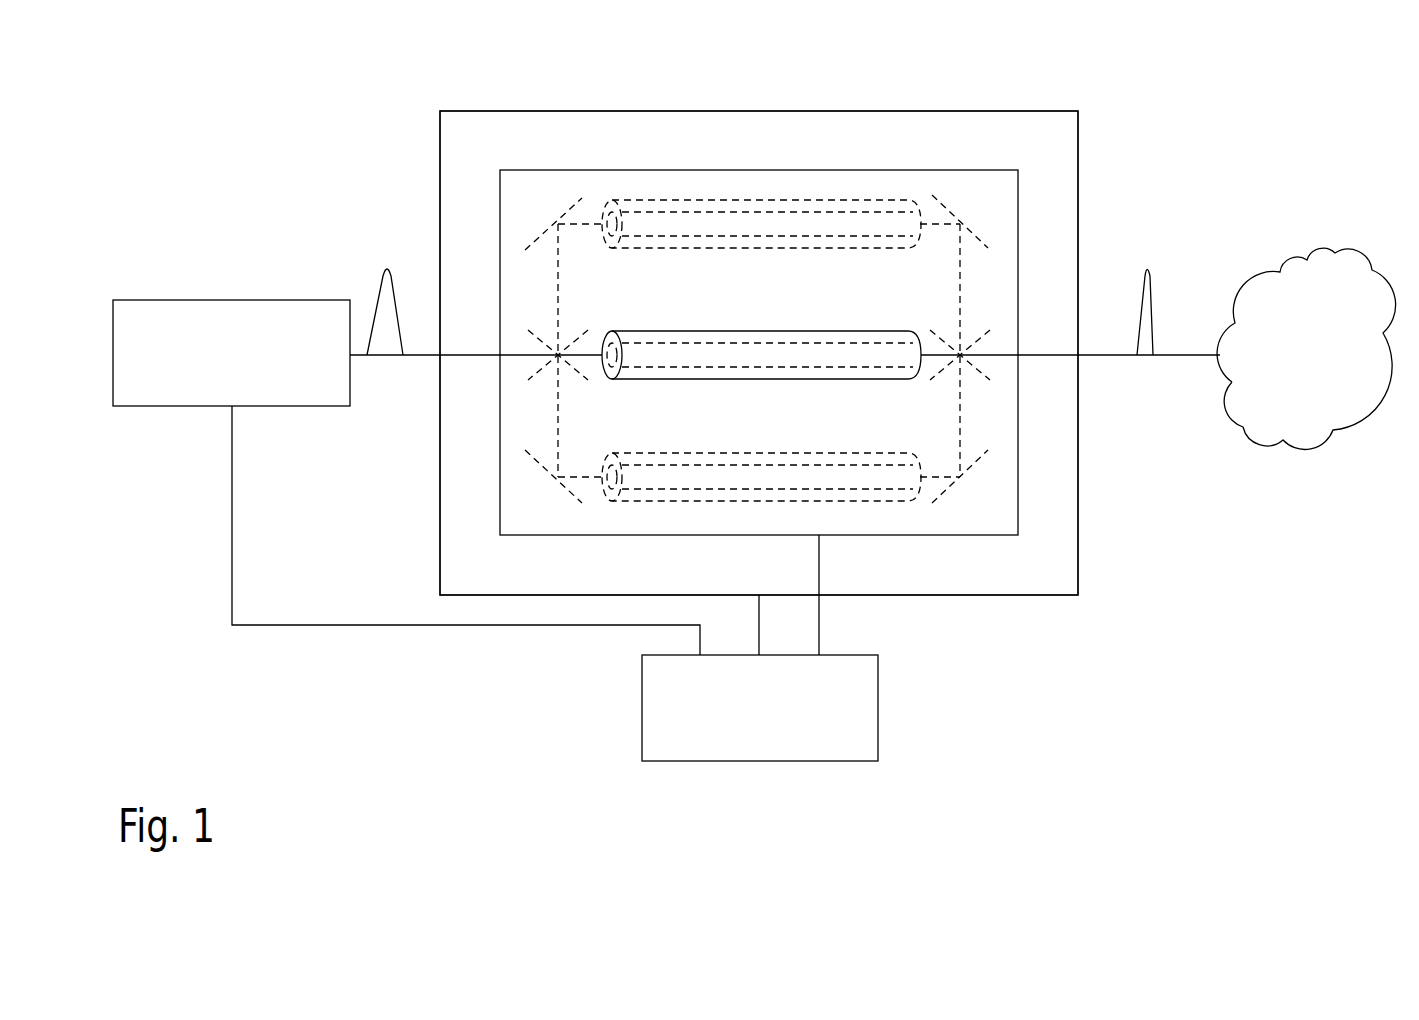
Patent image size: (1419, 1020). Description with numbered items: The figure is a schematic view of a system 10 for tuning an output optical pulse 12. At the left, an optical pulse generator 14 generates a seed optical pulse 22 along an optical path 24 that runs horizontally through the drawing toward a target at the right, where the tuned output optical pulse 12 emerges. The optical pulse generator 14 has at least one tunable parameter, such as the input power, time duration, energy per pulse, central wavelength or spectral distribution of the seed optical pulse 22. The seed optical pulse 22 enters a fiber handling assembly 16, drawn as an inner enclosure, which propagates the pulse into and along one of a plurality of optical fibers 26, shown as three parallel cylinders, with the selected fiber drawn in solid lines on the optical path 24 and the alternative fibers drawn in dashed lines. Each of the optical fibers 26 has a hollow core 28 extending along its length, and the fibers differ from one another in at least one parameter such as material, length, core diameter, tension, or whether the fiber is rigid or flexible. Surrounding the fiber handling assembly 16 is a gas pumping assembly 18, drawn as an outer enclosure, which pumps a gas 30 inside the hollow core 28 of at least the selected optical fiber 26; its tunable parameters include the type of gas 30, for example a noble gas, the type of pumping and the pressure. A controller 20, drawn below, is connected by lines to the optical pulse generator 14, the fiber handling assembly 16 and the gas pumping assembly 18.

The system 10 is at (311, 100).
The output optical pulse 12 is at (1148, 268).
The optical pulse generator 14 is at (232, 300).
The fiber handling assembly 16 is at (523, 170).
The gas pumping assembly 18 is at (590, 111).
The controller 20 is at (878, 708).
The seed optical pulse 22 is at (385, 268).
The optical path 24 is at (1190, 355).
The optical fibers 26 is at (700, 460).
The hollow core 28 is at (798, 462).
The gas 30 is at (1064, 577).